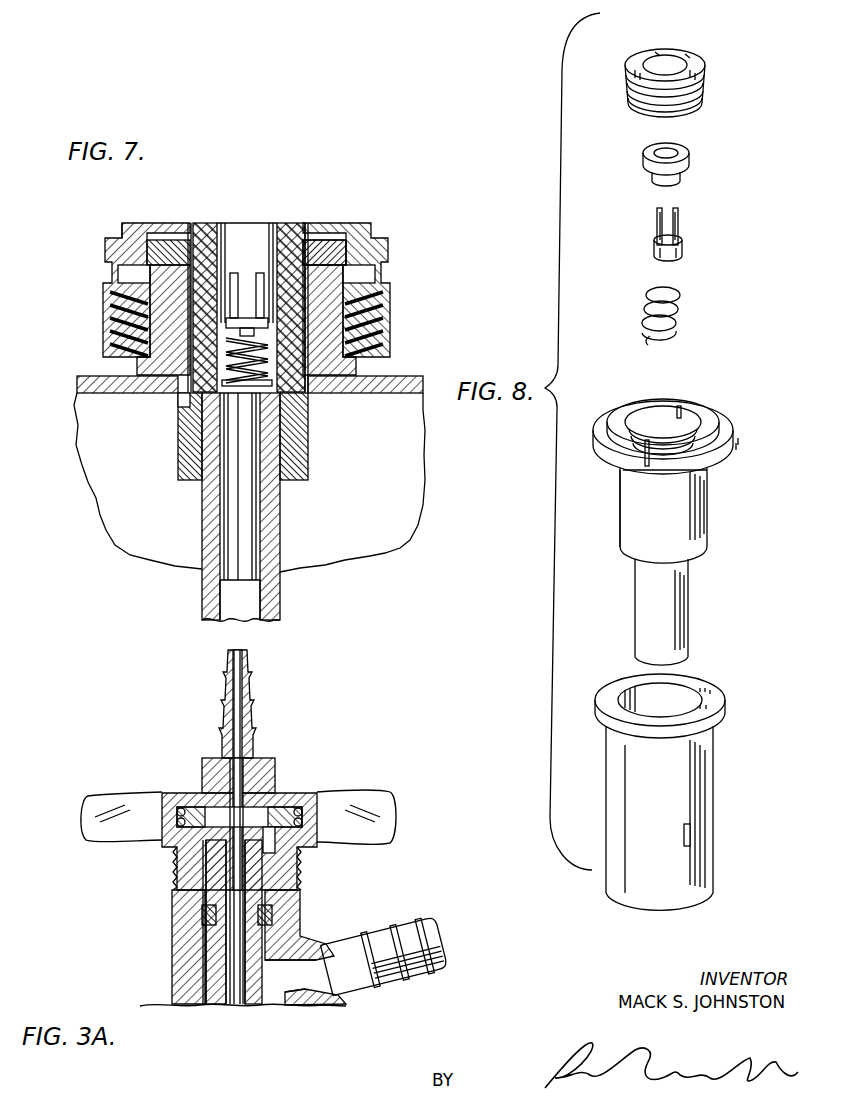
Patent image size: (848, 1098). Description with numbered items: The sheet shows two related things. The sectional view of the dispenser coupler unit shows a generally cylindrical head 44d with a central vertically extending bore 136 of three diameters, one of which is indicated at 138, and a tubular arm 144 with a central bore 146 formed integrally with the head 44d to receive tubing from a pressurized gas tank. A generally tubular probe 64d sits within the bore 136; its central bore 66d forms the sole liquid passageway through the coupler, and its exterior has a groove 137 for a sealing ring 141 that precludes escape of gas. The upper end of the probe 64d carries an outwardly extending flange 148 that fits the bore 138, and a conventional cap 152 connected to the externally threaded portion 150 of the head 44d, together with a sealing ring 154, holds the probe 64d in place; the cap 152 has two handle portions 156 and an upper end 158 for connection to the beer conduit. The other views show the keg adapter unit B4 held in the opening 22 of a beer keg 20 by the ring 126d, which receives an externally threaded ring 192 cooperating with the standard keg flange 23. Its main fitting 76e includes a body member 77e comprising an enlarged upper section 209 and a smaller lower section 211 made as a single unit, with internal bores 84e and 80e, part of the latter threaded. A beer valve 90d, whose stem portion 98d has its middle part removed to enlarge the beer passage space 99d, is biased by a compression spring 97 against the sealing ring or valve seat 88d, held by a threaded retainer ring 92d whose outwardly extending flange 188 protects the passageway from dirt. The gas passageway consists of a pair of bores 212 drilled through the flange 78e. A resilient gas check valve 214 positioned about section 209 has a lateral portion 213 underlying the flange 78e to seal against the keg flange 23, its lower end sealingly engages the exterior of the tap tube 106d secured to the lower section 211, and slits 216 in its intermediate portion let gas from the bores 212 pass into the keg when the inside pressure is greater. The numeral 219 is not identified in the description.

In FIG. 7, the ring 126d is at (362, 240).
In FIG. 7, the flange 78e is at (120, 240).
In FIG. 7, the lateral portion 213 is at (147, 255).
In FIG. 8, the lateral portion 213 is at (705, 686).
In FIG. 7, the beer keg flange 23 is at (345, 262).
In FIG. 7, the externally threaded ring 192 is at (132, 318).
In FIG. 7, the threads 219 is at (345, 312).
In FIG. 7, the opening 22 is at (165, 360).
In FIG. 7, the bores 212 is at (190, 235).
In FIG. 8, the bores 212 is at (683, 410).
In FIG. 7, the internal bore 80e is at (206, 236).
In FIG. 7, the retainer ring 92d is at (287, 236).
In FIG. 7, the beer keg 20 is at (370, 386).
In FIG. 7, the resilient gas check valve 214 is at (180, 462).
In FIG. 8, the resilient gas check valve 214 is at (716, 766).
In FIG. 7, the slits 216 is at (182, 406).
In FIG. 8, the slits 216 is at (690, 838).
In FIG. 7, the body member 77e is at (298, 413).
In FIG. 8, the body member 77e is at (708, 517).
In FIG. 7, the main fitting 76e is at (310, 455).
In FIG. 8, the main fitting 76e is at (637, 336).
In FIG. 7, the lower section 211 is at (268, 524).
In FIG. 8, the lower section 211 is at (688, 634).
In FIG. 7, the internal bore 84e is at (226, 514).
In FIG. 7, the coupling 106d is at (272, 604).
In FIG. 7, the keg adapter unit B4 is at (100, 291).
In FIG. 3A, the upper end 158 is at (247, 692).
In FIG. 3A, the cap 152 is at (193, 789).
In FIG. 3A, the handle portions 156 is at (95, 822).
In FIG. 3A, the sealing ring 154 is at (272, 810).
In FIG. 3A, the bore diameter 138 is at (174, 851).
In FIG. 3A, the externally threaded portion 150 is at (299, 872).
In FIG. 3A, the flange 148 is at (272, 834).
In FIG. 3A, the head 44d is at (167, 968).
In FIG. 3A, the probe 64d is at (210, 872).
In FIG. 3A, the groove 137 is at (208, 903).
In FIG. 3A, the sealing ring 141 is at (274, 915).
In FIG. 3A, the central bore 136 is at (210, 1002).
In FIG. 3A, the central bore 66d is at (238, 1012).
In FIG. 3A, the central bore 146 is at (318, 990).
In FIG. 3A, the tubular arm 144 is at (440, 968).
In FIG. 8, the flange 188 is at (692, 55).
In FIG. 8, the beer passage space 99d is at (706, 94).
In FIG. 8, the valve seat 88d is at (690, 155).
In FIG. 8, the stem portion 98d is at (681, 222).
In FIG. 8, the beer valve 90d is at (685, 245).
In FIG. 8, the compression spring 97 is at (681, 312).
In FIG. 8, the upper section 209 is at (640, 528).